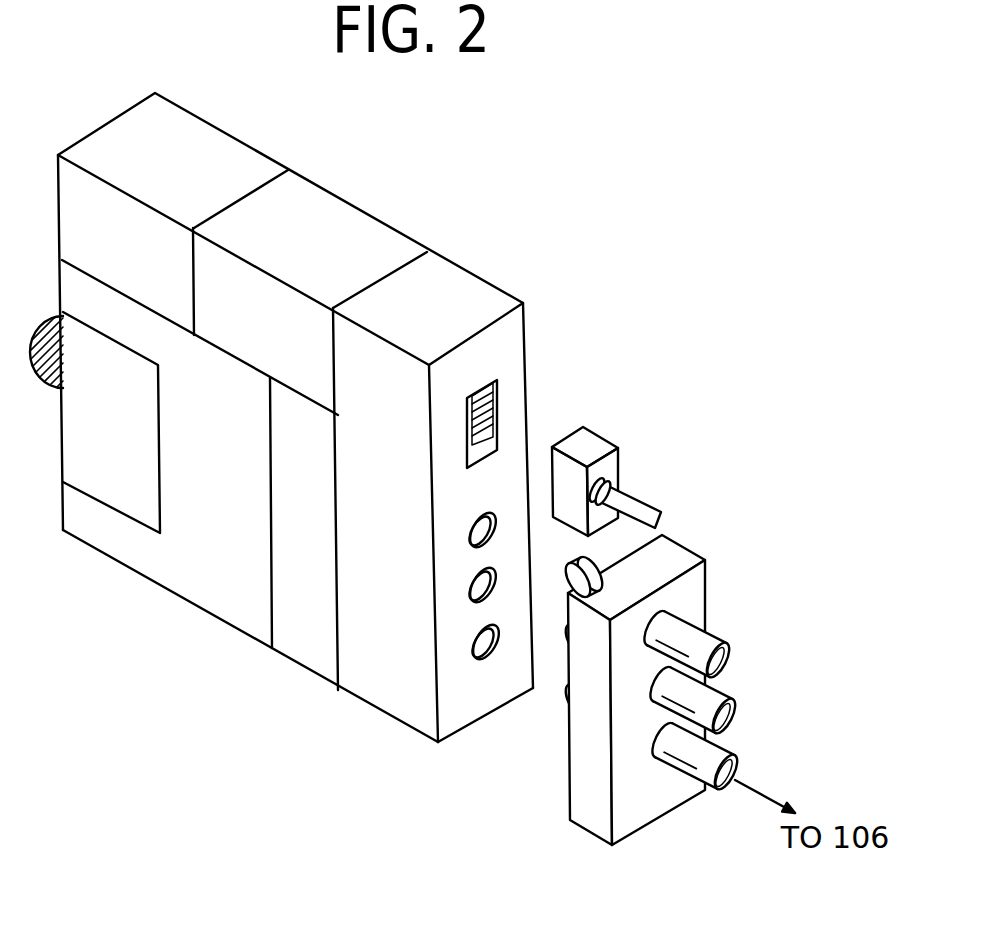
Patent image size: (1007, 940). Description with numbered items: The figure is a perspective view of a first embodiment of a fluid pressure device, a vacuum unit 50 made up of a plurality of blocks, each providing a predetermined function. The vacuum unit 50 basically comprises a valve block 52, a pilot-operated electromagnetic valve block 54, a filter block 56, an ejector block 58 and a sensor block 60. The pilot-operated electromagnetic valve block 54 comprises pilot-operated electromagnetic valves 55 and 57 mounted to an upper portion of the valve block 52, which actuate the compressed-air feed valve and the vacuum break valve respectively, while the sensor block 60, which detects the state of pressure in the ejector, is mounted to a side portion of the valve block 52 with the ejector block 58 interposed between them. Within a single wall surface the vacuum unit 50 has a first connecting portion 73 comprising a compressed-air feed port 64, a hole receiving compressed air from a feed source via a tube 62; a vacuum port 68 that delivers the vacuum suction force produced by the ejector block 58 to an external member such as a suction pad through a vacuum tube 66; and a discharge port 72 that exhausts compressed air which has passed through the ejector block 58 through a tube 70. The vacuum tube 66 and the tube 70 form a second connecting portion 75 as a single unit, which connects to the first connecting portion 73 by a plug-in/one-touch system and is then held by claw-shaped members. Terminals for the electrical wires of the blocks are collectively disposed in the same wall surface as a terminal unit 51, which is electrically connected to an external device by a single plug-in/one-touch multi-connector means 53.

The vacuum unit 50 is at (383, 142).
The terminal unit 51 is at (498, 403).
The valve block 52 is at (195, 585).
The multi-connector means 53 is at (592, 440).
The pilot-operated electromagnetic valve block 54 is at (108, 118).
The pilot-operated electromagnetic valve 55 is at (353, 232).
The filter block 56 is at (118, 488).
The pilot-operated electromagnetic valve 57 is at (245, 150).
The ejector block 58 is at (312, 657).
The sensor block 60 is at (460, 290).
The tube 62 is at (708, 640).
The compressed-air feed port 64 is at (468, 535).
The vacuum tube 66 is at (717, 803).
The vacuum port 68 is at (470, 648).
The tube 70 is at (722, 700).
The discharge port 72 is at (468, 592).
The first connecting portion 73 is at (445, 508).
The second connecting portion 75 is at (689, 535).